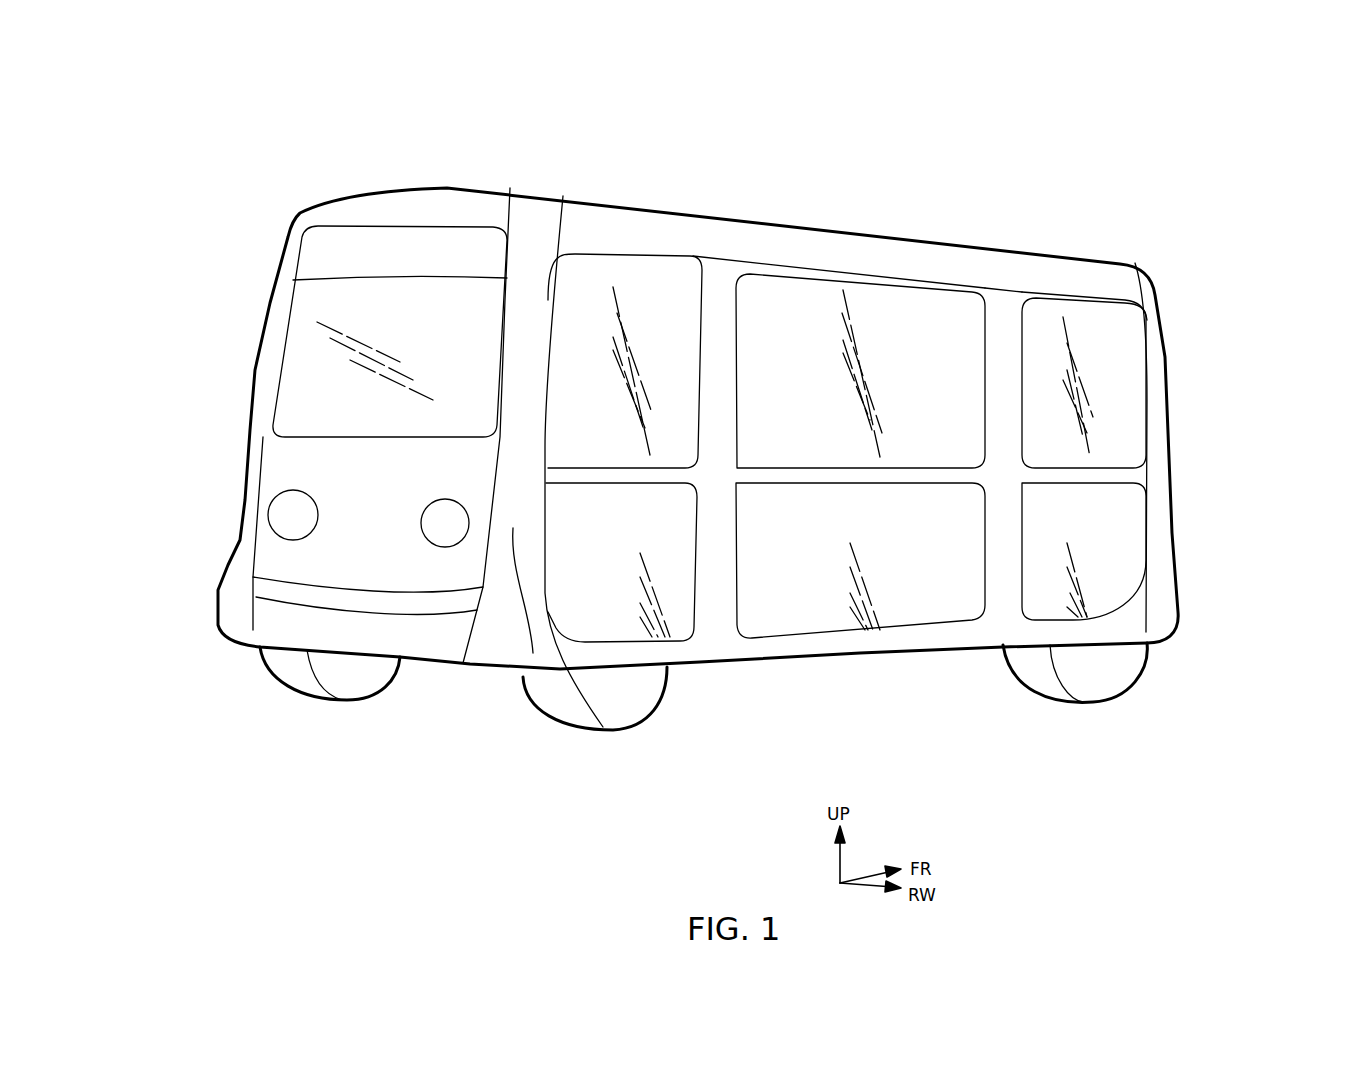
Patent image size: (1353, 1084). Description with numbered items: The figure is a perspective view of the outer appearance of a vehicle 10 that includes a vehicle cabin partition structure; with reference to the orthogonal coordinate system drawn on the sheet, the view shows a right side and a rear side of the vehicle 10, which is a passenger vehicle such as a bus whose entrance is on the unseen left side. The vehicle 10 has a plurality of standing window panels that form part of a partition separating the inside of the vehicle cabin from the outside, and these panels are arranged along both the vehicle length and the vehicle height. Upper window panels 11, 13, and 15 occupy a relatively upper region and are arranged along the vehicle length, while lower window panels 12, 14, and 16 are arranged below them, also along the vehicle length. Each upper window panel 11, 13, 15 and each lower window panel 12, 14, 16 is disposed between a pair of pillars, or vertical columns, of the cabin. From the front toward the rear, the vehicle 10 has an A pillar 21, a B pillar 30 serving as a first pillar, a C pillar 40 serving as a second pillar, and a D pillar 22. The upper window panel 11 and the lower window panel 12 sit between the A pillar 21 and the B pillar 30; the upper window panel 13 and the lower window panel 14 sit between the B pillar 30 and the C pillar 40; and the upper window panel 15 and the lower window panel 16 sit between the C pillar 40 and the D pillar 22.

The vehicle 10 is at (158, 200).
The upper window panel 11 is at (1123, 372).
The lower window panel 12 is at (1117, 558).
The upper window panel 13 is at (930, 327).
The lower window panel 14 is at (790, 593).
The upper window panel 15 is at (672, 296).
The lower window panel 16 is at (678, 577).
The A pillar 21 is at (1165, 320).
The D pillar 22 is at (528, 220).
The B pillar 30 is at (1005, 327).
The C pillar 40 is at (727, 290).